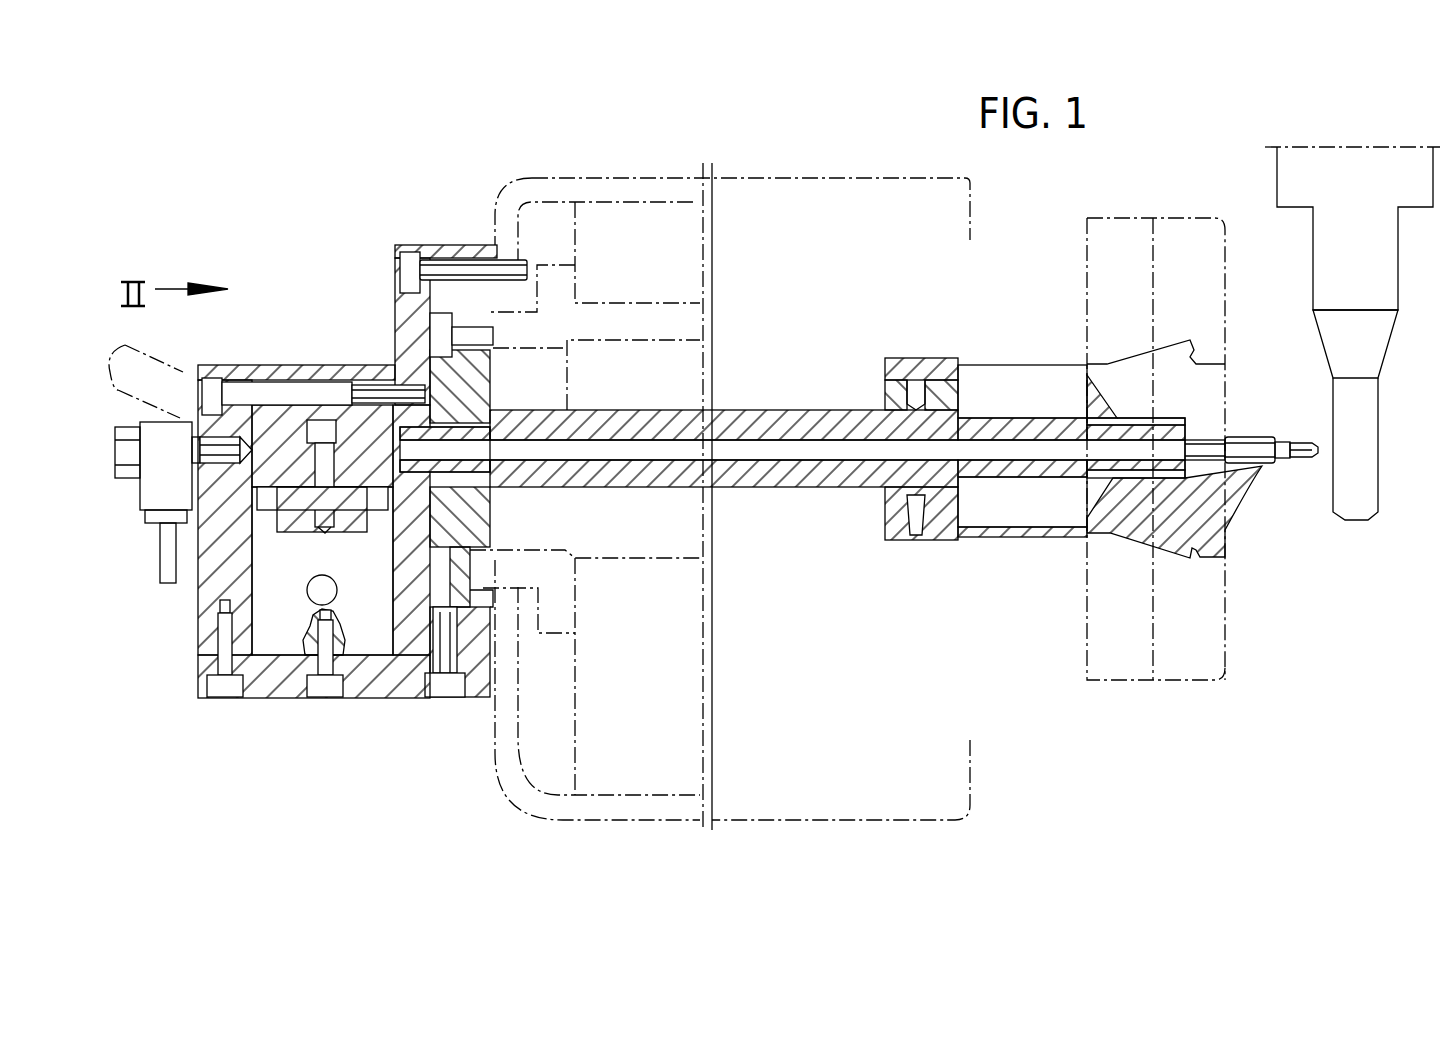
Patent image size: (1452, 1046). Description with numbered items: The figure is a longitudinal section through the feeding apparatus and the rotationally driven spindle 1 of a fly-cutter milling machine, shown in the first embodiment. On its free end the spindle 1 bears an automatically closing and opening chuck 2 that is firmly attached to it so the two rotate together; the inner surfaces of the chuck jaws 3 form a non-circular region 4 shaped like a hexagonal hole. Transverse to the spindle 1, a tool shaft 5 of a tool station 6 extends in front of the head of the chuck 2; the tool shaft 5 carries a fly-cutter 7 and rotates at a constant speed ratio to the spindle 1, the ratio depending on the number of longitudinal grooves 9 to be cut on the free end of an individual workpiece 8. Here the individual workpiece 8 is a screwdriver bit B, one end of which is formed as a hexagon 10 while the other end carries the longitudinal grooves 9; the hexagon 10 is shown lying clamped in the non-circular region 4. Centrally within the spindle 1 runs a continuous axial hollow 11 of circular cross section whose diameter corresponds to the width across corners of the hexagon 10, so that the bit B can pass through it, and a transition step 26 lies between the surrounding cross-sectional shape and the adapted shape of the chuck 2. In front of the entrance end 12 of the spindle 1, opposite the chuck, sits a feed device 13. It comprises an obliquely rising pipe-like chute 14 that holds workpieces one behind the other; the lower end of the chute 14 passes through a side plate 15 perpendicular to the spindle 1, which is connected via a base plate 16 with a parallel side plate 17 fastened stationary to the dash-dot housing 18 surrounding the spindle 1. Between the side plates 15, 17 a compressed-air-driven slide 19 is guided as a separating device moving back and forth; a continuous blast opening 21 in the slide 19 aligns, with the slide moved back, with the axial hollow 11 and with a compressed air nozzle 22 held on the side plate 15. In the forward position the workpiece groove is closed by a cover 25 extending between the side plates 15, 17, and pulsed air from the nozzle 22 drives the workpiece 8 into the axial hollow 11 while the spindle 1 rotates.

The spindle 1 is at (808, 413).
The chuck 2 is at (1232, 536).
The chuck jaws 3 is at (1212, 385).
The non-circular region 4 is at (1210, 442).
The tool shaft 5 is at (1370, 288).
The tool station 6 is at (1352, 140).
The fly-cutter 7 is at (1326, 437).
The individual workpiece 8 is at (1267, 467).
The longitudinal grooves 9 is at (1327, 453).
The hexagon 10 is at (1240, 448).
The axial hollow 11 is at (833, 450).
The entrance end 12 is at (490, 393).
The feed device 13 is at (313, 347).
The chute 14 is at (152, 374).
The side plate 15 is at (215, 578).
The base plate 16 is at (358, 682).
The side plate 17 is at (407, 642).
The machine housing 18 is at (532, 177).
The slide 19 is at (266, 500).
The blast opening 21 is at (378, 503).
The compressed air nozzle 22 is at (158, 492).
The cover 25 is at (347, 364).
The transition step 26 is at (1080, 523).
The screwdriver bit B is at (1266, 440).